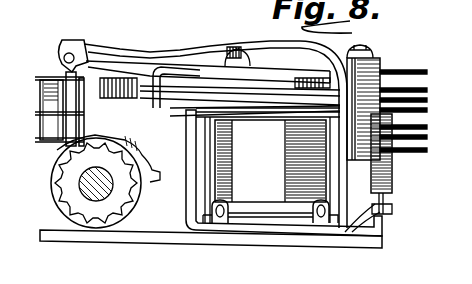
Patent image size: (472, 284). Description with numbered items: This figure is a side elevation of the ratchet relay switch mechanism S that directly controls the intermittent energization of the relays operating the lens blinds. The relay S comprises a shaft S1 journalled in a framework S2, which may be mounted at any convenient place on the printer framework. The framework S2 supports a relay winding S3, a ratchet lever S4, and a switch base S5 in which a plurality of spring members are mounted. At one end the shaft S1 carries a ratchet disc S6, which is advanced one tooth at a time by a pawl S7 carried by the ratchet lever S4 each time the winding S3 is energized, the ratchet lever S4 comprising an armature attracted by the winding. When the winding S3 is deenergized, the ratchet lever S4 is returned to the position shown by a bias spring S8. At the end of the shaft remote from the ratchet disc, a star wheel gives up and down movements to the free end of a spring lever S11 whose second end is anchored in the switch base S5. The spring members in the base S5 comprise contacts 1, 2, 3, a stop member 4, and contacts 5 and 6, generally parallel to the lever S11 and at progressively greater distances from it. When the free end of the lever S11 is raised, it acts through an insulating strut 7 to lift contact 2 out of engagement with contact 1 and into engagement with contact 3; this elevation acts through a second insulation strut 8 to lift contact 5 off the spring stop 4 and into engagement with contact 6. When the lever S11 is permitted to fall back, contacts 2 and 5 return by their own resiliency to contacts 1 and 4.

The ratchet relay switch mechanism S is at (190, 252).
The shaft S1 is at (82, 193).
The framework S2 is at (100, 242).
The relay winding S3 is at (276, 179).
The ratchet lever S4 is at (68, 40).
The switch base S5 is at (385, 224).
The ratchet disc S6 is at (118, 200).
The pawl S7 is at (60, 150).
The bias spring S8 is at (394, 180).
The spring lever S11 is at (427, 152).
The contact 1 is at (427, 137).
The contact 2 is at (427, 126).
The contact 3 is at (427, 109).
The stop member 4 is at (427, 100).
The contact 5 is at (427, 89).
The contact 6 is at (427, 71).
The strut 7 is at (42, 135).
The second insulation strut 8 is at (50, 77).